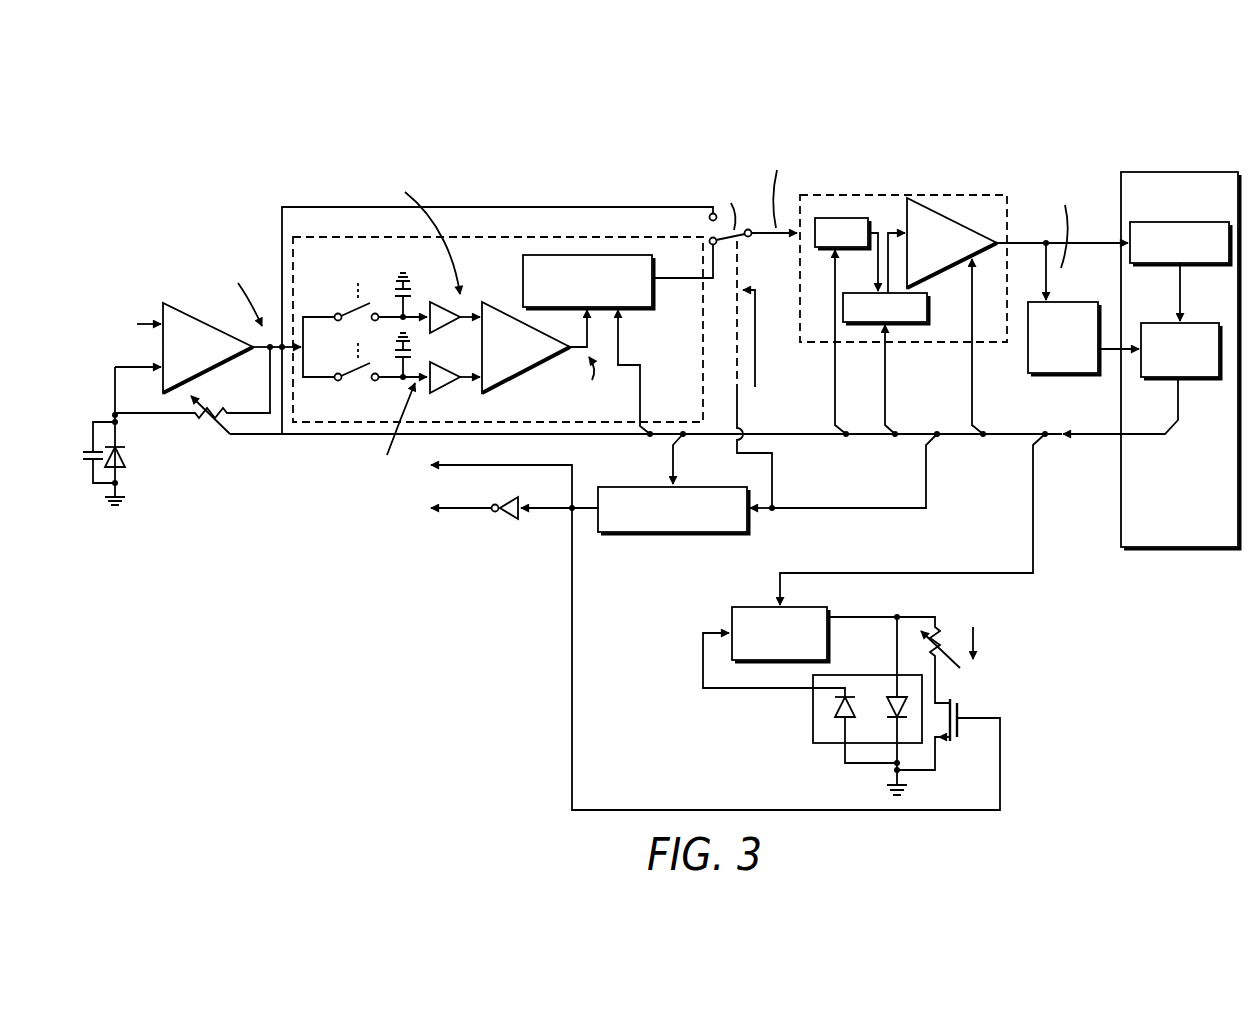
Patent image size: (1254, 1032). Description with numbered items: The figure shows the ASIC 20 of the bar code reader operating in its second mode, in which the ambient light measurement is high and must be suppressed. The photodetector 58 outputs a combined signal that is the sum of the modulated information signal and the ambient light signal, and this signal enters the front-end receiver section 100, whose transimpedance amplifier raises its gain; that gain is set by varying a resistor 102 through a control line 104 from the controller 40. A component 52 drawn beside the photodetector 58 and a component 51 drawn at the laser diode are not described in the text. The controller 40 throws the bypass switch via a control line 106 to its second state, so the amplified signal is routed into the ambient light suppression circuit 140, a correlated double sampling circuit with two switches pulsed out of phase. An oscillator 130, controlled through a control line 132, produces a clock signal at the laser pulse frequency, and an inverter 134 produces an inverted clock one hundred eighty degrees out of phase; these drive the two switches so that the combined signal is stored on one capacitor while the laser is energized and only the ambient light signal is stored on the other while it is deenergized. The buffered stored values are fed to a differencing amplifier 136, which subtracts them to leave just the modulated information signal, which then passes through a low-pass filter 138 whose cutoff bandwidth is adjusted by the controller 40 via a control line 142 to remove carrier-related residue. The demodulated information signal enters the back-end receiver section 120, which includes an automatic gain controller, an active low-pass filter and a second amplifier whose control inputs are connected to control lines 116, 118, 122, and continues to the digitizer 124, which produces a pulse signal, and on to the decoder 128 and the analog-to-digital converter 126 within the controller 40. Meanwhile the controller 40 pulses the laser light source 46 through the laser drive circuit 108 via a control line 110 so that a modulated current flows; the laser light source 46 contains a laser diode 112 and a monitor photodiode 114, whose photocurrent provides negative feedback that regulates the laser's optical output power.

The ASIC 20 is at (352, 527).
The controller 40 is at (1180, 172).
The laser light source 46 is at (812, 730).
The laser diode 51 is at (861, 705).
The photodetector 52 is at (134, 453).
The photodetector 58 is at (120, 470).
The front-end receiver section 100 is at (202, 224).
The resistor 102 is at (197, 417).
The control line 104 is at (270, 437).
The control line 106 is at (754, 326).
The laser drive circuit 108 is at (750, 607).
The control line 110 is at (1035, 560).
The laser diode 112 is at (887, 712).
The monitor photodiode 114 is at (836, 705).
The control line 116 is at (837, 353).
The control line 118 is at (887, 353).
The back-end receiver section 120 is at (888, 195).
The control line 122 is at (973, 353).
The digitizer 124 is at (1065, 378).
The analog-to-digital converter 126 is at (1180, 222).
The decoder 128 is at (1195, 380).
The oscillator 130 is at (630, 534).
The control line 132 is at (674, 452).
The inverter 134 is at (500, 522).
The differencing amplifier 136 is at (513, 383).
The low-pass filter 138 is at (585, 255).
The ambient light suppression circuit 140 is at (478, 237).
The control line 142 is at (641, 370).